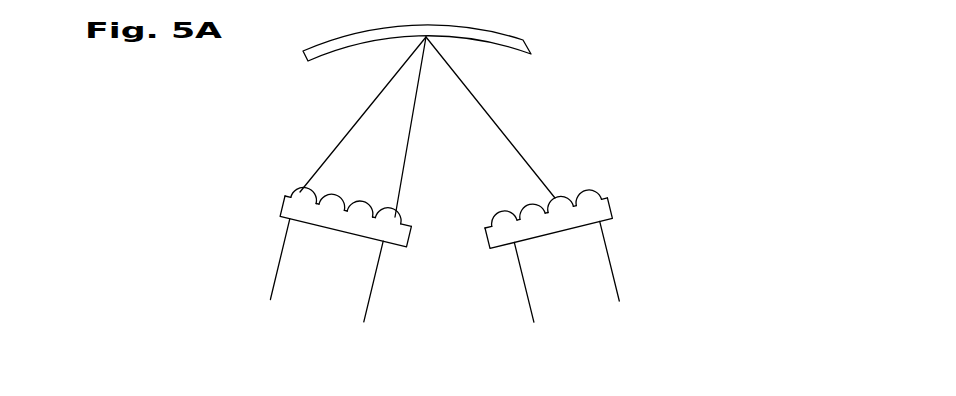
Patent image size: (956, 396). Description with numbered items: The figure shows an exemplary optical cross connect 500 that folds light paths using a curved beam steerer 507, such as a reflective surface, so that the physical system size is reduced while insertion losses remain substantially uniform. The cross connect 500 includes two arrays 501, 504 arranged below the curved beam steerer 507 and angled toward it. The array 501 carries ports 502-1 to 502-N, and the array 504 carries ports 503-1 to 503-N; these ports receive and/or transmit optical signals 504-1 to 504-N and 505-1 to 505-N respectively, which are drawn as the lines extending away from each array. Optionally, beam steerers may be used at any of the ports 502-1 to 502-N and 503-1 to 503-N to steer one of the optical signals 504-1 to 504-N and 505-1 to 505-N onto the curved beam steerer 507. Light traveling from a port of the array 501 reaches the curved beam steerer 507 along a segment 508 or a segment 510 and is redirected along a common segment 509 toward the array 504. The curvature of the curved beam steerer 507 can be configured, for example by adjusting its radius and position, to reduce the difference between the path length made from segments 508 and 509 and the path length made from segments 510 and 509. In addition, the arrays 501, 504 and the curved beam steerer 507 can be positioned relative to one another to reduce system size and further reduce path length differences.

The cross connect 500 is at (743, 168).
The array 501 is at (325, 228).
The port 502-1 is at (300, 192).
The port 502-N is at (405, 222).
The port 503-1 is at (503, 218).
The port 503-N is at (587, 190).
The array 504 is at (575, 232).
The optical signal 504-1 is at (283, 268).
The optical signal 504-N is at (368, 300).
The optical signal 505-1 is at (528, 300).
The optical signal 505-N is at (622, 288).
The curved beam steerer 507 is at (524, 40).
The segment 508 is at (376, 99).
The segment 509 is at (488, 110).
The segment 510 is at (403, 162).